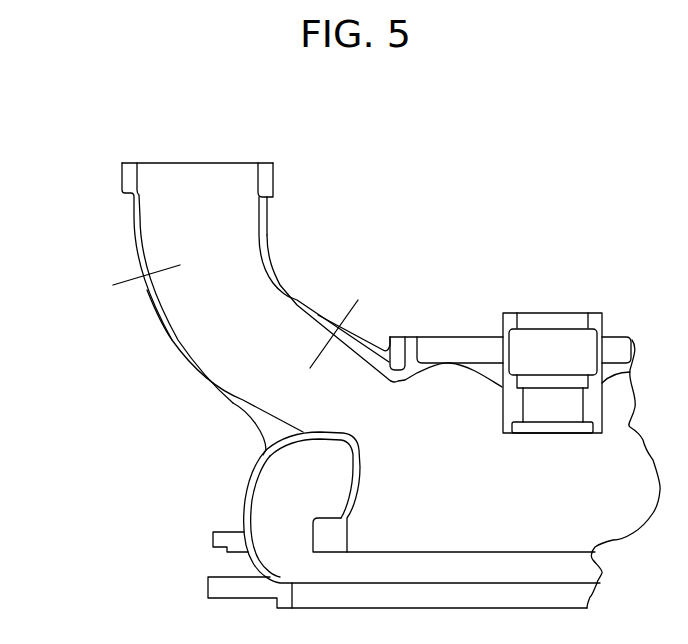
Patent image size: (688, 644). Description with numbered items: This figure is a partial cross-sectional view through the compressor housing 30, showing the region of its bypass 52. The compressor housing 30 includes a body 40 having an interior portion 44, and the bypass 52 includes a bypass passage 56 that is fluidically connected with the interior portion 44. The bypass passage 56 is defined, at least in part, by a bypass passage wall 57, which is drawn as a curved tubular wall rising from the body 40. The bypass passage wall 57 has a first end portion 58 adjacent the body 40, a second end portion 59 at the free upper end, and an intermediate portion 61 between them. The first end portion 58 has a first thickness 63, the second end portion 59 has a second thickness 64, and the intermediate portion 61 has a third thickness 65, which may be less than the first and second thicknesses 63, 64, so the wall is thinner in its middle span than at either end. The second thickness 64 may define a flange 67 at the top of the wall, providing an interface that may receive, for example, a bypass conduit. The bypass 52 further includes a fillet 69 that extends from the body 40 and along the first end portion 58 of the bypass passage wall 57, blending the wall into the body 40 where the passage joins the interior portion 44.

The compressor housing 30 is at (213, 493).
The body 40 is at (246, 556).
The interior portion 44 is at (632, 506).
The bypass 52 is at (108, 265).
The bypass passage 56 is at (258, 300).
The bypass passage wall 57 is at (170, 342).
The first end portion 58 is at (390, 375).
The second end portion 59 is at (131, 170).
The intermediate portion 61 is at (133, 235).
The first thickness 63 is at (312, 365).
The second thickness 64 is at (240, 182).
The third thickness 65 is at (176, 266).
The flange 67 is at (270, 158).
The fillet 69 is at (246, 442).